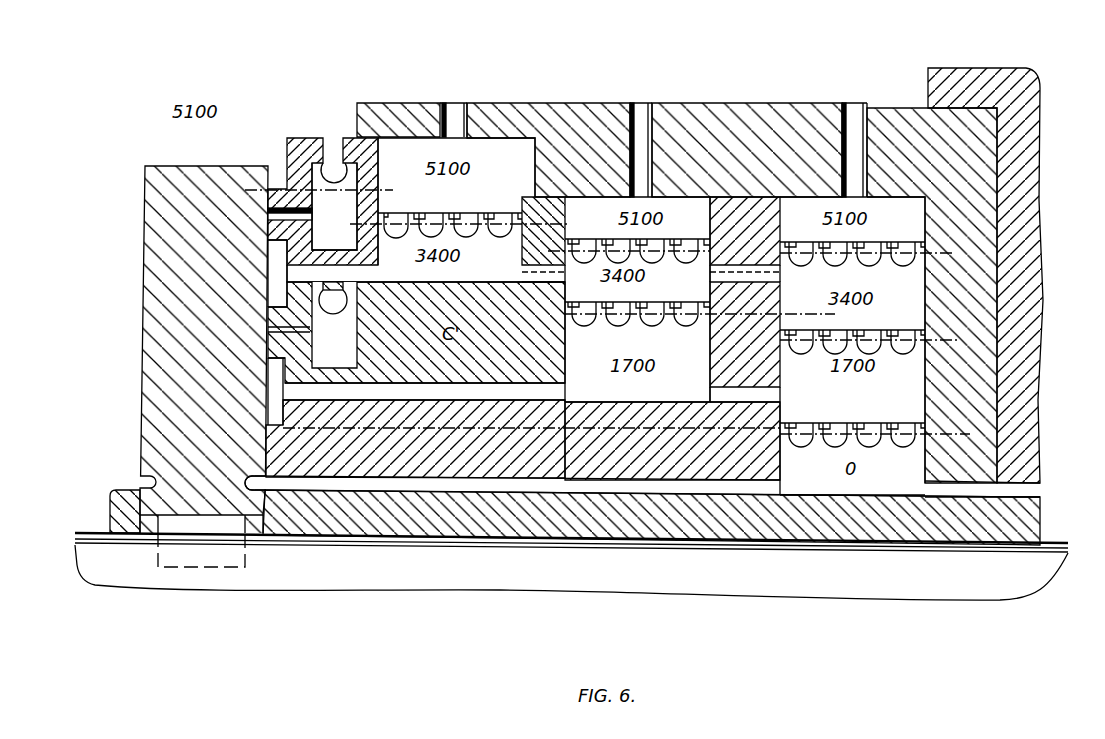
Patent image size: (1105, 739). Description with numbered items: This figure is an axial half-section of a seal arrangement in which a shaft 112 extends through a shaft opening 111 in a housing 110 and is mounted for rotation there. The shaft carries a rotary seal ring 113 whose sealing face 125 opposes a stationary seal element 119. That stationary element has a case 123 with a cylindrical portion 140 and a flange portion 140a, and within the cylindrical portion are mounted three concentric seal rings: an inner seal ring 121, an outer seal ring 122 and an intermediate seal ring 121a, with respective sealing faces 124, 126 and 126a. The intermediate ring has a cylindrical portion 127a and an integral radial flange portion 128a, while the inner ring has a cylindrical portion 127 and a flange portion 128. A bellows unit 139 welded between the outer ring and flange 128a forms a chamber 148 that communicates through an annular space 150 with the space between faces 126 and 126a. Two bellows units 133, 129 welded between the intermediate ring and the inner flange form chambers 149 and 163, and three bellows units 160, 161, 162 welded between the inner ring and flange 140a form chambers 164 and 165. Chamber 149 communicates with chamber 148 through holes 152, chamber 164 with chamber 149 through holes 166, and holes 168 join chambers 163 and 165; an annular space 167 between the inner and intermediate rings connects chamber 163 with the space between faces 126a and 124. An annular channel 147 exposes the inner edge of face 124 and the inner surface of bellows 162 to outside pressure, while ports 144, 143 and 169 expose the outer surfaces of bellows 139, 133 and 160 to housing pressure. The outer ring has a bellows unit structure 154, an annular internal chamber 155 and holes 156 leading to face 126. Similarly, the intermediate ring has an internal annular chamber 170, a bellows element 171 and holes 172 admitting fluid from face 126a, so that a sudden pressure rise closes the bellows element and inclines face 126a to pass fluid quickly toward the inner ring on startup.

The housing 110 is at (1022, 233).
The shaft opening 111 is at (1025, 487).
The shaft 112 is at (862, 578).
The rotary seal ring 113 is at (157, 412).
The stationary seal element 119 is at (724, 101).
The inner seal ring 121 is at (465, 482).
The intermediate seal ring 121a is at (487, 385).
The outer seal ring 122 is at (297, 133).
The case 123 is at (660, 112).
The sealing face 124 is at (263, 448).
The sealing face 125 is at (268, 243).
The sealing face 126 is at (268, 188).
The sealing face 126a is at (283, 327).
The cylindrical portion 127 is at (553, 482).
The cylindrical portion 127a is at (437, 378).
The flange portion 128 is at (742, 210).
The radial flange portion 128a is at (546, 198).
The bellows unit 129 is at (640, 303).
The bellows unit 133 is at (640, 241).
The bellows unit 139 is at (483, 213).
The cylindrical portion 140 is at (503, 110).
The flange portion 140a is at (975, 382).
The port 143 is at (638, 110).
The port 144 is at (455, 103).
The annular channel 147 is at (960, 496).
The chamber 148 is at (428, 210).
The chamber 149 is at (562, 285).
The annular space 150 is at (298, 272).
The hole 152 is at (545, 312).
The bellows unit structure 154 is at (333, 166).
The annular internal chamber 155 is at (319, 206).
The hole 156 is at (268, 211).
The bellows unit 160 is at (850, 242).
The bellows unit 161 is at (852, 330).
The bellows unit 162 is at (852, 423).
The chamber 163 is at (580, 350).
The chamber 164 is at (905, 282).
The chamber 165 is at (808, 406).
The hole 166 is at (738, 280).
The annular space 167 is at (347, 393).
The hole 168 is at (717, 392).
The port 169 is at (855, 110).
The internal annular chamber 170 is at (338, 359).
The bellows element 171 is at (334, 325).
The hole 172 is at (268, 337).